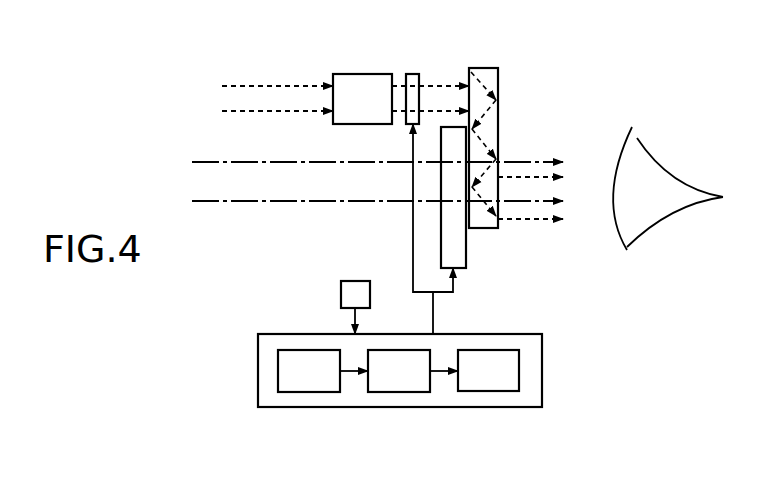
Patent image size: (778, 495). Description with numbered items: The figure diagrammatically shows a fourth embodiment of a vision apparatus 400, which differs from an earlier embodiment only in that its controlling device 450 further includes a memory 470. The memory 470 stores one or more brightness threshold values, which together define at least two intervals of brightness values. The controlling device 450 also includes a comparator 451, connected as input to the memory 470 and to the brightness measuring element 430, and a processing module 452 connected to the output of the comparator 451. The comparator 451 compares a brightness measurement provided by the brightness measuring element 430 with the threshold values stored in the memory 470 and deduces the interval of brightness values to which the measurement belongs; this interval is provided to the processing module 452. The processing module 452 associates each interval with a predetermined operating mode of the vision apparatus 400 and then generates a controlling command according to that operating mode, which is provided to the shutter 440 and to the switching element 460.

The vision apparatus 400 is at (562, 105).
The brightness measuring element 430 is at (352, 293).
The shutter 440 is at (457, 249).
The controlling device 450 is at (542, 385).
The comparator 451 is at (388, 386).
The processing module 452 is at (477, 386).
The switching element 460 is at (413, 78).
The memory 470 is at (278, 363).